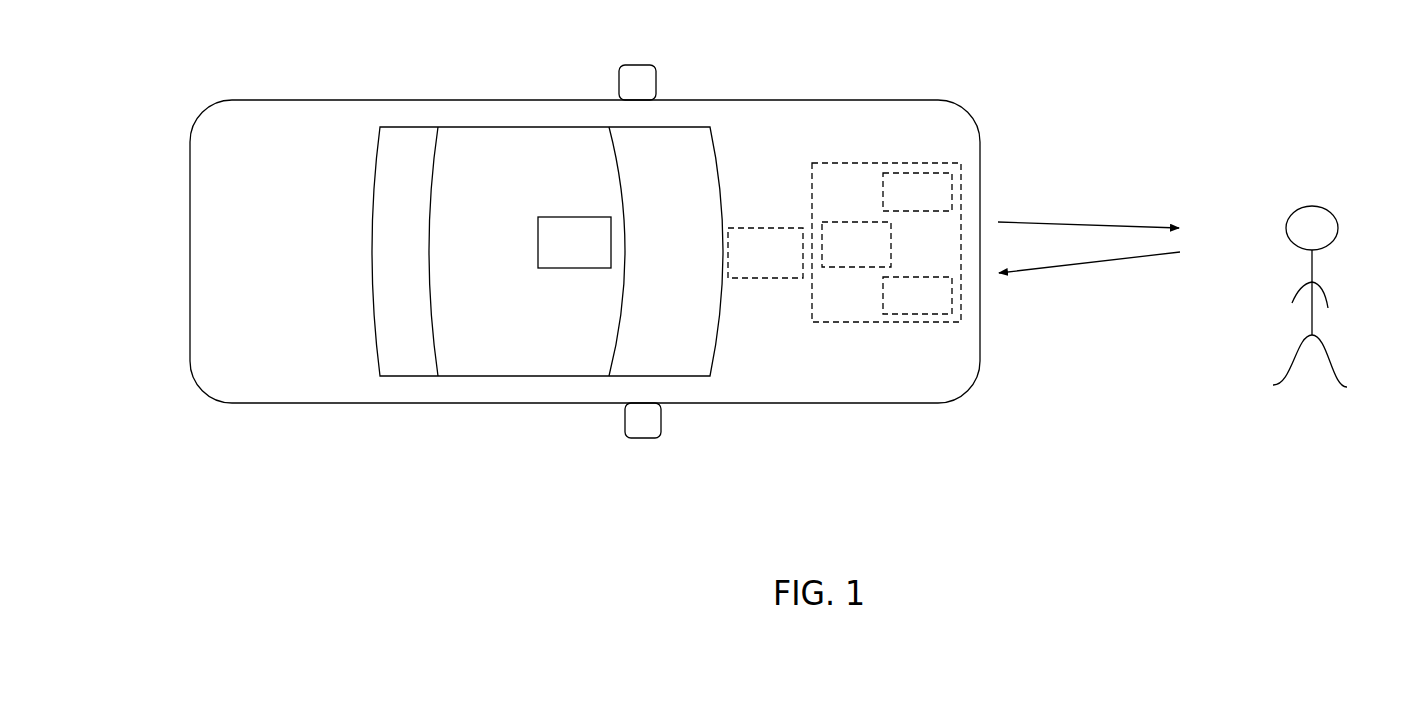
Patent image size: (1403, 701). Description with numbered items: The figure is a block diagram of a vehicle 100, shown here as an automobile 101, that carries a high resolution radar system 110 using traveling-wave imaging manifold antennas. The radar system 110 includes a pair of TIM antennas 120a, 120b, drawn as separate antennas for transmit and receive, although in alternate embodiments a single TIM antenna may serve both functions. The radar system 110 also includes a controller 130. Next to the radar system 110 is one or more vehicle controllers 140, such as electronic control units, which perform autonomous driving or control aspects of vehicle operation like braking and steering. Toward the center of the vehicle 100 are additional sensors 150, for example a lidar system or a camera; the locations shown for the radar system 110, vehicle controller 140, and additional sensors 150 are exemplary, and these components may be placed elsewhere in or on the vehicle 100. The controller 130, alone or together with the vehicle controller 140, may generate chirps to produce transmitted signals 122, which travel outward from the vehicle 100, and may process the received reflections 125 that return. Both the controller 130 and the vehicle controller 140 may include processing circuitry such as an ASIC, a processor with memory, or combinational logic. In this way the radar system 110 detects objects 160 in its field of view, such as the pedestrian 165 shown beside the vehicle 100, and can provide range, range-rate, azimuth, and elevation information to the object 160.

The vehicle 100 is at (567, 249).
The automobile 101 is at (283, 100).
The radar system 110 is at (886, 242).
The TIM antenna 120a is at (917, 192).
The TIM antenna 120b is at (917, 295).
The transmitted signals 122 is at (1075, 222).
The received reflections 125 is at (1085, 266).
The controller 130 is at (856, 244).
The vehicle controller 140 is at (765, 253).
The additional sensors 150 is at (574, 242).
The object 160 is at (1280, 263).
The pedestrian 165 is at (1282, 198).